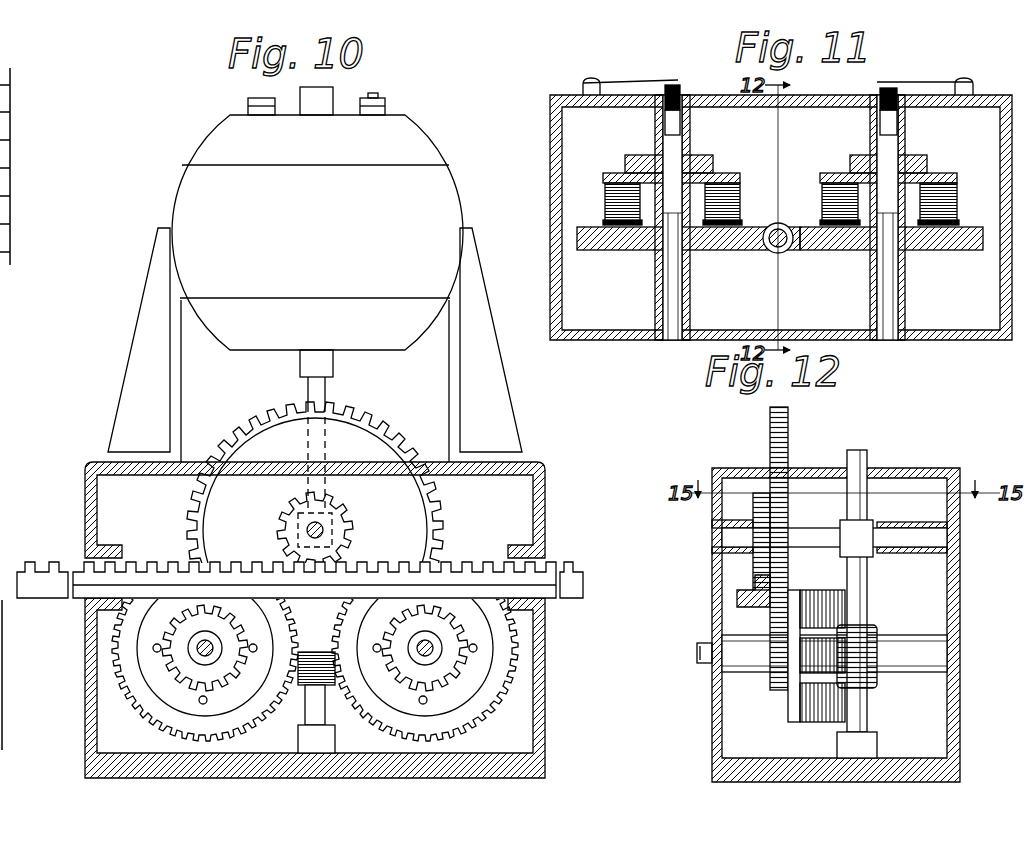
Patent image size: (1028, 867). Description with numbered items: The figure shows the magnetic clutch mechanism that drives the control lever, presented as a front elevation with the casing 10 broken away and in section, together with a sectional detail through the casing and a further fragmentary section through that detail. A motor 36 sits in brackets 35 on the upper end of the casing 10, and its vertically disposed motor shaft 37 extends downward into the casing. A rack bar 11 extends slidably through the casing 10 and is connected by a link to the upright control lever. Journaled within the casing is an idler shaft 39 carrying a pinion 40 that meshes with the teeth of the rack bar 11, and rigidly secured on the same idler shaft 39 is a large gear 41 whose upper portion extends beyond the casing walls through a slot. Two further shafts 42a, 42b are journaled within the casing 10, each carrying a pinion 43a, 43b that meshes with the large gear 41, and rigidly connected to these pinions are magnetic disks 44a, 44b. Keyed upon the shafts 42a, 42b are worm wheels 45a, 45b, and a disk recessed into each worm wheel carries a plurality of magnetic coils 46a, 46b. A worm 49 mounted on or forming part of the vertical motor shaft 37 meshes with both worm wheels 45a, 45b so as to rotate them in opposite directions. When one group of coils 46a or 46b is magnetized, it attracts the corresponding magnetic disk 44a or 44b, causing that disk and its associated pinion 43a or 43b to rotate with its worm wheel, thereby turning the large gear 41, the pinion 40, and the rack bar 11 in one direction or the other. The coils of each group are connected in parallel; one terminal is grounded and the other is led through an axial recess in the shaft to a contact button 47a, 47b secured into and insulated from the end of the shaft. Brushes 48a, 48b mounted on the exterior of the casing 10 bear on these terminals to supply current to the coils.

In FIG. 10, the casing 10 is at (315, 620).
In FIG. 12, the casing 10 is at (950, 720).
In FIG. 10, the rack bar 11 is at (583, 590).
In FIG. 12, the rack bar 11 is at (740, 592).
In FIG. 10, the brackets 35 is at (315, 345).
In FIG. 10, the motor 36 is at (317, 232).
In FIG. 10, the motor shaft 37 is at (322, 390).
In FIG. 11, the motor shaft 37 is at (772, 250).
In FIG. 12, the motor shaft 37 is at (867, 470).
In FIG. 10, the idler shaft 39 is at (325, 532).
In FIG. 12, the idler shaft 39 is at (890, 530).
In FIG. 10, the pinion 40 is at (333, 526).
In FIG. 12, the pinion 40 is at (761, 541).
In FIG. 10, the large gear 41 is at (404, 452).
In FIG. 12, the large gear 41 is at (790, 447).
In FIG. 10, the shaft 42a is at (192, 644).
In FIG. 11, the shaft 42a is at (682, 318).
In FIG. 10, the shaft 42b is at (440, 632).
In FIG. 11, the shaft 42b is at (895, 320).
In FIG. 12, the shaft 42b is at (834, 653).
In FIG. 10, the pinion 43a is at (190, 660).
In FIG. 11, the pinion 43a is at (633, 157).
In FIG. 10, the pinion 43b is at (410, 660).
In FIG. 11, the pinion 43b is at (920, 160).
In FIG. 12, the pinion 43b is at (790, 695).
In FIG. 10, the magnetic disk 44a is at (205, 648).
In FIG. 11, the magnetic disk 44a is at (740, 185).
In FIG. 10, the magnetic disk 44b is at (425, 648).
In FIG. 11, the magnetic disk 44b is at (952, 185).
In FIG. 10, the worm wheel 45a is at (205, 649).
In FIG. 11, the worm wheel 45a is at (608, 251).
In FIG. 10, the worm wheel 45b is at (425, 649).
In FIG. 11, the worm wheel 45b is at (935, 252).
In FIG. 11, the magnetic coils 46a is at (606, 200).
In FIG. 11, the magnetic coils 46b is at (948, 212).
In FIG. 12, the magnetic coils 46b is at (825, 590).
In FIG. 11, the contact button 47a is at (680, 95).
In FIG. 11, the contact button 47b is at (880, 90).
In FIG. 12, the contact button 47b is at (697, 650).
In FIG. 11, the brush 48a is at (655, 81).
In FIG. 11, the brush 48b is at (925, 86).
In FIG. 12, the brush 48b is at (700, 665).
In FIG. 10, the worm 49 is at (316, 652).
In FIG. 11, the worm 49 is at (790, 250).
In FIG. 12, the worm 49 is at (880, 640).